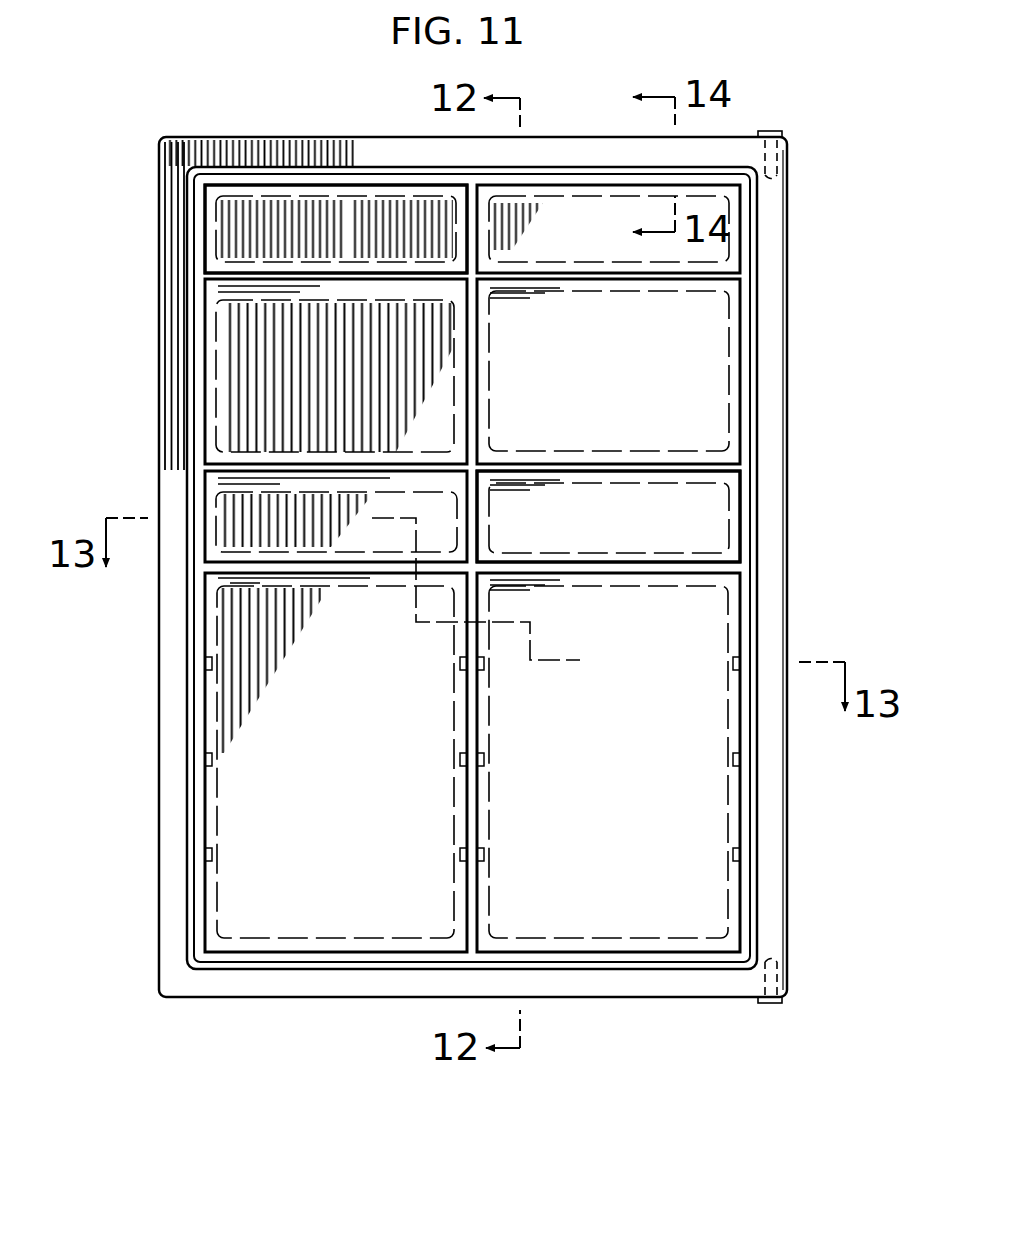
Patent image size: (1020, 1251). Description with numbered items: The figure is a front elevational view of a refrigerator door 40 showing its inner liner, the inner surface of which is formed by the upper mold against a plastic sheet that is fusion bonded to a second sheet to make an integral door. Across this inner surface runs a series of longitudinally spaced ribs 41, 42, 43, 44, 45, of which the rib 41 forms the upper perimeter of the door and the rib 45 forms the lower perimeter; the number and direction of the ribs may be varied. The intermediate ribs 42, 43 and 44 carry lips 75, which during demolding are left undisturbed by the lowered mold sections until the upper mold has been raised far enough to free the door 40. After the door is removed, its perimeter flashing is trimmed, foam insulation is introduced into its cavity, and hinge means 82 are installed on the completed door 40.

The refrigerator door 40 is at (230, 136).
The rib 41 is at (386, 180).
The rib 42 is at (710, 274).
The rib 43 is at (717, 471).
The rib 44 is at (723, 569).
The rib 45 is at (597, 962).
The lip 75 is at (250, 270).
The hinge means 82 is at (772, 131).